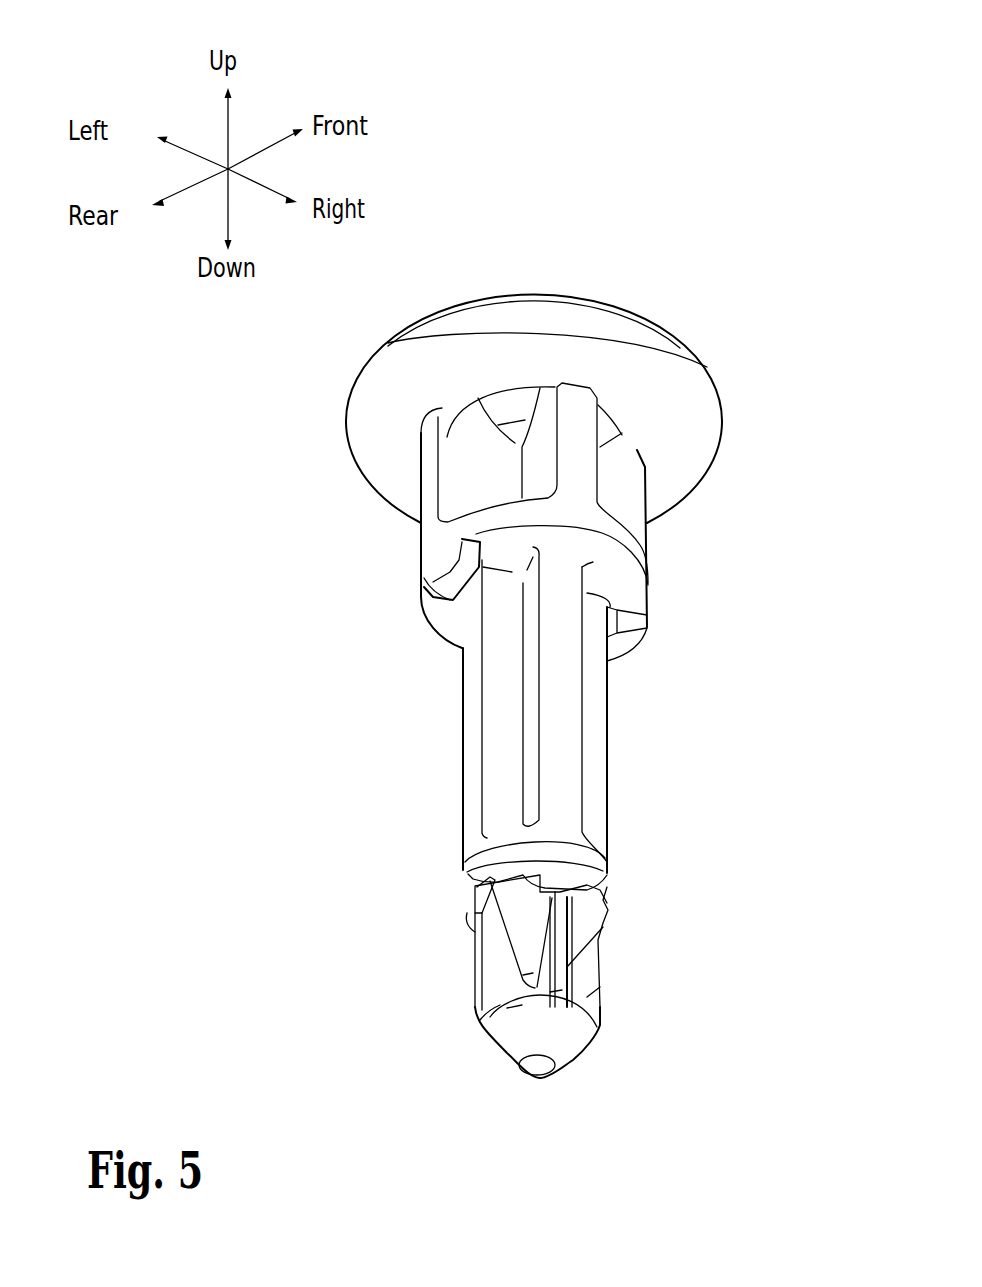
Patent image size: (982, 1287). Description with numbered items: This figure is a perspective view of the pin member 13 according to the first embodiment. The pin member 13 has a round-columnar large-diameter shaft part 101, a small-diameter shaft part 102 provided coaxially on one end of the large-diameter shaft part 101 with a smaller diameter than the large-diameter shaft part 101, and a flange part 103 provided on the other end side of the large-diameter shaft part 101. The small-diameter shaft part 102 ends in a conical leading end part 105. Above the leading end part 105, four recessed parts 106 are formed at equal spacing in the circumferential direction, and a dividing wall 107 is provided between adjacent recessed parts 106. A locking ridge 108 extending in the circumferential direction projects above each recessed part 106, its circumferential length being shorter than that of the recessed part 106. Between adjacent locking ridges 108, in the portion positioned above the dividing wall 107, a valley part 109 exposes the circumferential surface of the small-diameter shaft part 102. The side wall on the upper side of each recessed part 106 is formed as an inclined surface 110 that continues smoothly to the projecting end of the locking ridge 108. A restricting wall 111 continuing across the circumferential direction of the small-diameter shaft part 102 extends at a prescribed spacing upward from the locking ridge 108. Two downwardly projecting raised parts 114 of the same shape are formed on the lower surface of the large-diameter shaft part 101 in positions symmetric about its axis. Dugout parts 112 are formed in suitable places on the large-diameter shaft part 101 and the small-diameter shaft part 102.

The pin member 13 is at (770, 288).
The large-diameter shaft part 101 is at (407, 482).
The small-diameter shaft part 102 is at (450, 713).
The flange part 103 is at (387, 362).
The leading end part 105 is at (507, 1047).
The recessed part 106 is at (527, 990).
The dividing wall 107 is at (520, 978).
The locking ridge 108 is at (490, 882).
The valley part 109 is at (477, 917).
The inclined surface 110 is at (507, 928).
The restricting wall 111 is at (467, 863).
The dugout part 112 is at (453, 498).
The raised part 114 is at (430, 605).